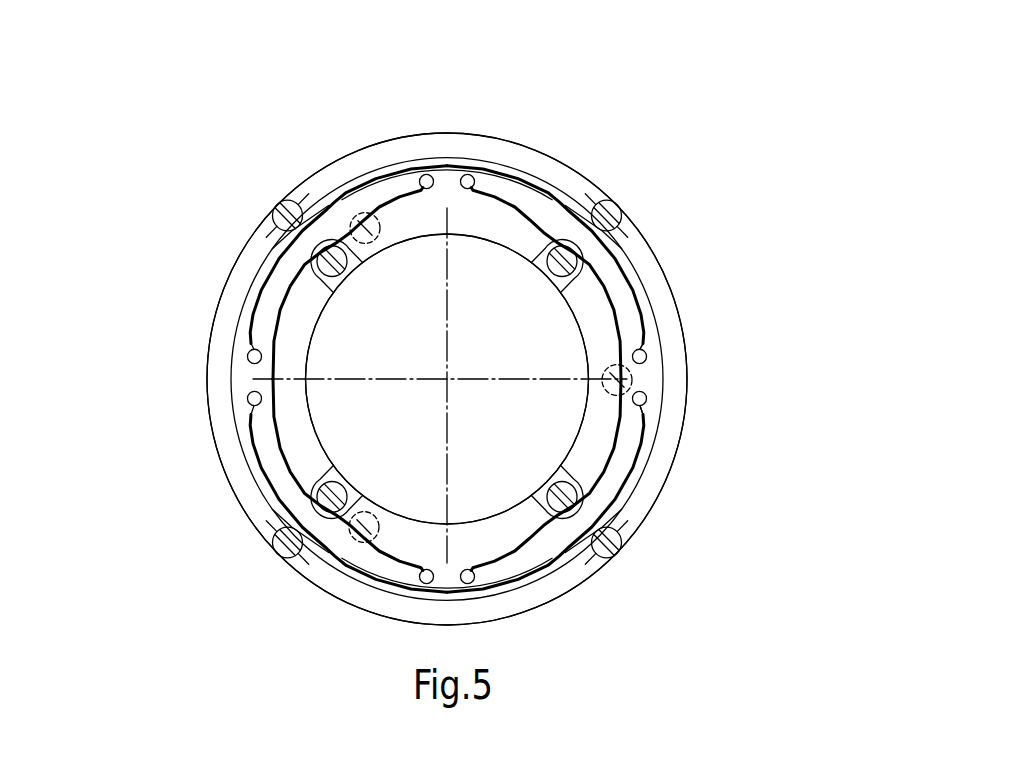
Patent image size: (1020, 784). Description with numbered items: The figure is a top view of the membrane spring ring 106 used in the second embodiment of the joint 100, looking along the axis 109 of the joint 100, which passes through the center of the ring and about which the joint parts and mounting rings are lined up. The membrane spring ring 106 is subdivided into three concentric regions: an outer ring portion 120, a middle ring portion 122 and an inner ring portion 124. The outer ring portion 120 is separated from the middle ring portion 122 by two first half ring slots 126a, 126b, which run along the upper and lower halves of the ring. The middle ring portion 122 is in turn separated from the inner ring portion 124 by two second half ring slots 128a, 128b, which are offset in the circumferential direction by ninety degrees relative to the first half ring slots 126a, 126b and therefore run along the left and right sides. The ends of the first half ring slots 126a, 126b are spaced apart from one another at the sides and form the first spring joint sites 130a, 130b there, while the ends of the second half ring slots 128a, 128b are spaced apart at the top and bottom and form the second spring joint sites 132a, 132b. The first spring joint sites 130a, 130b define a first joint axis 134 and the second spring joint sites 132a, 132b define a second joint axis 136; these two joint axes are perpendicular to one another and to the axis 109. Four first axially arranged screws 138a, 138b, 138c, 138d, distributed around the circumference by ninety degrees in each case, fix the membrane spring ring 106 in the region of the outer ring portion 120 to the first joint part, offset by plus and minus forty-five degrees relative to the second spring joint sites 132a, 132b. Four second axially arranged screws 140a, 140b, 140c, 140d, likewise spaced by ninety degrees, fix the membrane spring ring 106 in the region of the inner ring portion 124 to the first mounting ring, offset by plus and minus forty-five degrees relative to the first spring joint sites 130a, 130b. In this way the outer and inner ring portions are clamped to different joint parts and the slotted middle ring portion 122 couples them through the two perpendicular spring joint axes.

The joint 100 is at (643, 122).
The membrane spring ring 106 is at (493, 131).
The axis 109 is at (446, 381).
The outer ring portion 120 is at (656, 276).
The middle ring portion 122 is at (632, 427).
The inner ring portion 124 is at (585, 453).
The first half ring slot 126a is at (538, 187).
The first half ring slot 126b is at (385, 583).
The second half ring slot 128a is at (288, 321).
The second half ring slot 128b is at (636, 318).
The first spring joint site 130a is at (257, 367).
The first spring joint site 130b is at (641, 378).
The second spring joint site 132a is at (436, 177).
The second spring joint site 132b is at (454, 578).
The first joint axis 134 is at (332, 376).
The second joint axis 136 is at (448, 351).
The first screw 138a is at (289, 203).
The first screw 138b is at (620, 212).
The first screw 138c is at (614, 550).
The first screw 138d is at (285, 547).
The second screw 140a is at (352, 264).
The second screw 140b is at (552, 268).
The second screw 140c is at (563, 488).
The second screw 140d is at (340, 488).